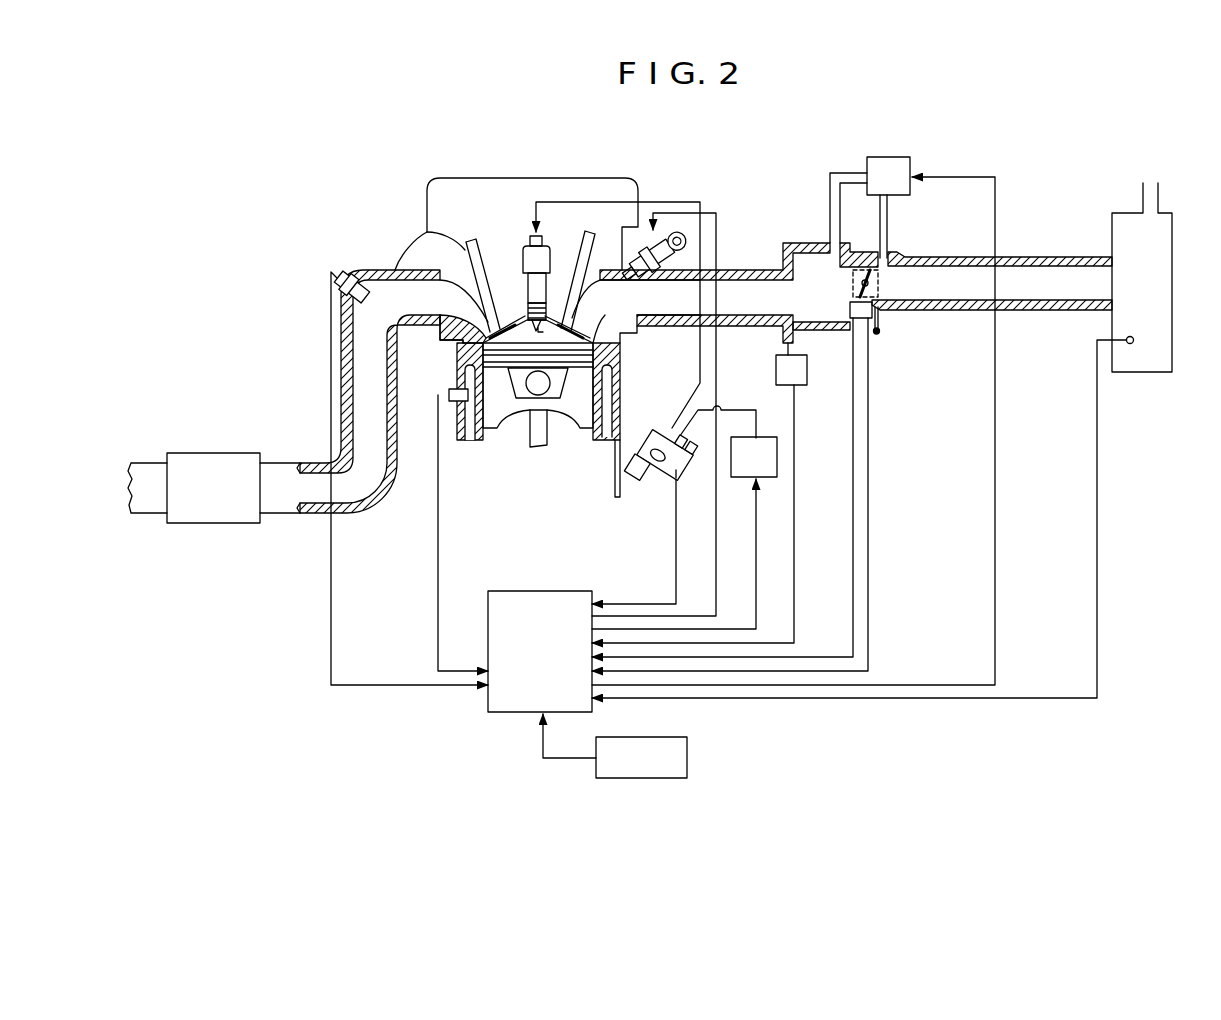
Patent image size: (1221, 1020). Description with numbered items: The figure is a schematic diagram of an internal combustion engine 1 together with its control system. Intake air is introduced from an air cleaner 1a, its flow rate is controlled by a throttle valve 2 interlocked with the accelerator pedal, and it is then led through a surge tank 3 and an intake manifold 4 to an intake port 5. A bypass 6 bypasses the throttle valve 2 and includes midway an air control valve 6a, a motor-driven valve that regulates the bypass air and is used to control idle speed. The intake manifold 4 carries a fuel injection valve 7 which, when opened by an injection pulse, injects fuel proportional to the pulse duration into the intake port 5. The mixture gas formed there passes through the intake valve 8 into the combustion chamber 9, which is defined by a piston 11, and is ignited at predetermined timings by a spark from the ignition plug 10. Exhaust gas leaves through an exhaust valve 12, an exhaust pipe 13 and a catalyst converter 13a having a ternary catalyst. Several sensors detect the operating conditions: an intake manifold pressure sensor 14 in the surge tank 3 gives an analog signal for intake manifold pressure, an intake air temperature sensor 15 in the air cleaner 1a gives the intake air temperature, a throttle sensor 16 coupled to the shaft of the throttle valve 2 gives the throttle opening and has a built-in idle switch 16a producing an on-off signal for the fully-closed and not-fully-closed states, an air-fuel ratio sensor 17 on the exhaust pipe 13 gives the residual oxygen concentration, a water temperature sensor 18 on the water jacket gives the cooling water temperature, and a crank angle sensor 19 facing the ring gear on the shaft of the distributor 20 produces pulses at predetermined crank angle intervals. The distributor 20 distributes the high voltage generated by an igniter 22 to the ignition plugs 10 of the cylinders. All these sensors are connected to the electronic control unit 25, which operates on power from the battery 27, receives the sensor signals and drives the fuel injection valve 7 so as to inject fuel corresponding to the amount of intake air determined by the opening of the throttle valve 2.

The internal combustion engine 1 is at (541, 452).
The air cleaner 1a is at (1173, 365).
The throttle valve 2 is at (880, 280).
The surge tank 3 is at (800, 242).
The intake manifold 4 is at (736, 327).
The intake port 5 is at (658, 312).
The bypass 6 is at (897, 210).
The air control valve 6a is at (910, 157).
The fuel injection valve 7 is at (647, 238).
The intake valve 8 is at (583, 263).
The combustion chamber 9 is at (566, 340).
The ignition plug 10 is at (523, 247).
The piston 11 is at (508, 410).
The exhaust valve 12 is at (502, 307).
The exhaust pipe 13 is at (399, 270).
The catalyst converter 13a is at (258, 453).
The intake manifold pressure sensor 14 is at (808, 371).
The intake air temperature sensor 15 is at (1133, 339).
The throttle sensor 16 is at (850, 291).
The idle switch 16a is at (879, 321).
The air-fuel ratio sensor 17 is at (348, 275).
The water temperature sensor 18 is at (449, 393).
The crank angle sensor 19 is at (677, 479).
The distributor 20 is at (679, 471).
The igniter 22 is at (769, 478).
The electronic control unit 25 is at (576, 590).
The battery 27 is at (688, 752).